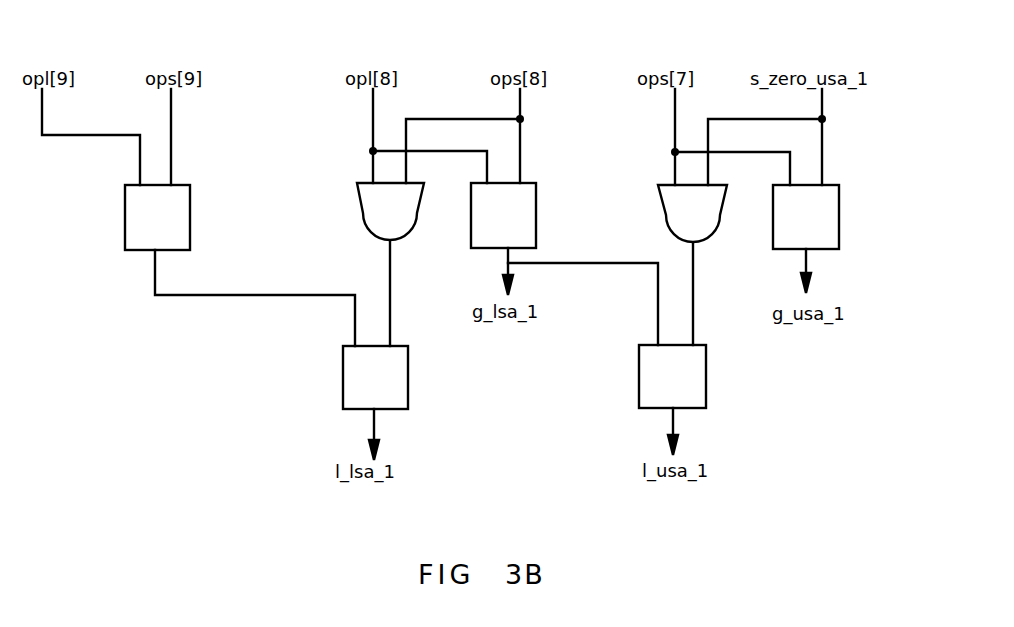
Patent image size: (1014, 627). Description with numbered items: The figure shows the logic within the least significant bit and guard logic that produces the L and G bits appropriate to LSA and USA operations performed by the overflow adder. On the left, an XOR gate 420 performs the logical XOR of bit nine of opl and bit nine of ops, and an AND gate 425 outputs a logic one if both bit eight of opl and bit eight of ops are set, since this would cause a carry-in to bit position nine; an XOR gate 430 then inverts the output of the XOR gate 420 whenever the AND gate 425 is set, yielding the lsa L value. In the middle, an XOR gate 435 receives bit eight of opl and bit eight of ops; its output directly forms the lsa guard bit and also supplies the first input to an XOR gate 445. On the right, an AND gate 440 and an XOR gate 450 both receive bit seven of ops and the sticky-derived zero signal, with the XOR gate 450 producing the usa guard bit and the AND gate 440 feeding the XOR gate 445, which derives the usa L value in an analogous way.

The XOR gate 420 is at (192, 222).
The AND gate 425 is at (405, 242).
The XOR gate 430 is at (410, 393).
The XOR gate 435 is at (537, 232).
The AND gate 440 is at (710, 238).
The XOR gate 445 is at (708, 388).
The XOR gate 450 is at (841, 227).